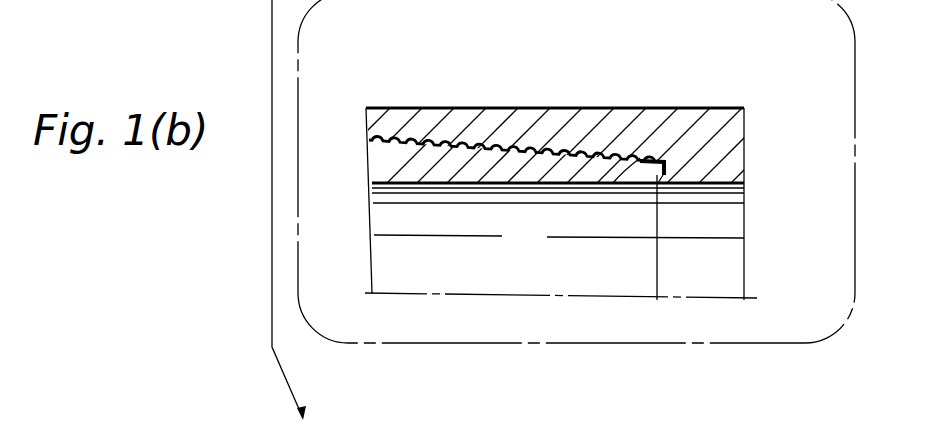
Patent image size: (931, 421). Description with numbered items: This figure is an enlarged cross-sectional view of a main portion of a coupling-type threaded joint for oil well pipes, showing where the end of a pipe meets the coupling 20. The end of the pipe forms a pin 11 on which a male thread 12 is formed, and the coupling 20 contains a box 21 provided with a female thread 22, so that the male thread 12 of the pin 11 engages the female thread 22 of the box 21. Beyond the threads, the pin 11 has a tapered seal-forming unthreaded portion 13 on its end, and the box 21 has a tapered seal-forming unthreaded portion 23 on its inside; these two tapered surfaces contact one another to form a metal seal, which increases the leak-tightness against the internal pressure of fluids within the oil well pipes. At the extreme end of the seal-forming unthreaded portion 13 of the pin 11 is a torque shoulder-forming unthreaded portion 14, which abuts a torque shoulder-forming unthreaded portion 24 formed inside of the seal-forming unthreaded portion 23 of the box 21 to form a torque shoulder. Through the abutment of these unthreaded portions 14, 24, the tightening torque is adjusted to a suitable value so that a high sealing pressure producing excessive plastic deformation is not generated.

The pin 11 is at (413, 170).
The male thread 12 is at (452, 150).
The seal-forming unthreaded portion 13 is at (610, 184).
The torque shoulder-forming unthreaded portion 14 is at (656, 168).
The coupling 20 is at (590, 97).
The box 21 is at (393, 120).
The female thread 22 is at (445, 157).
The seal-forming unthreaded portion 23 is at (645, 153).
The torque shoulder-forming unthreaded portion 24 is at (668, 162).